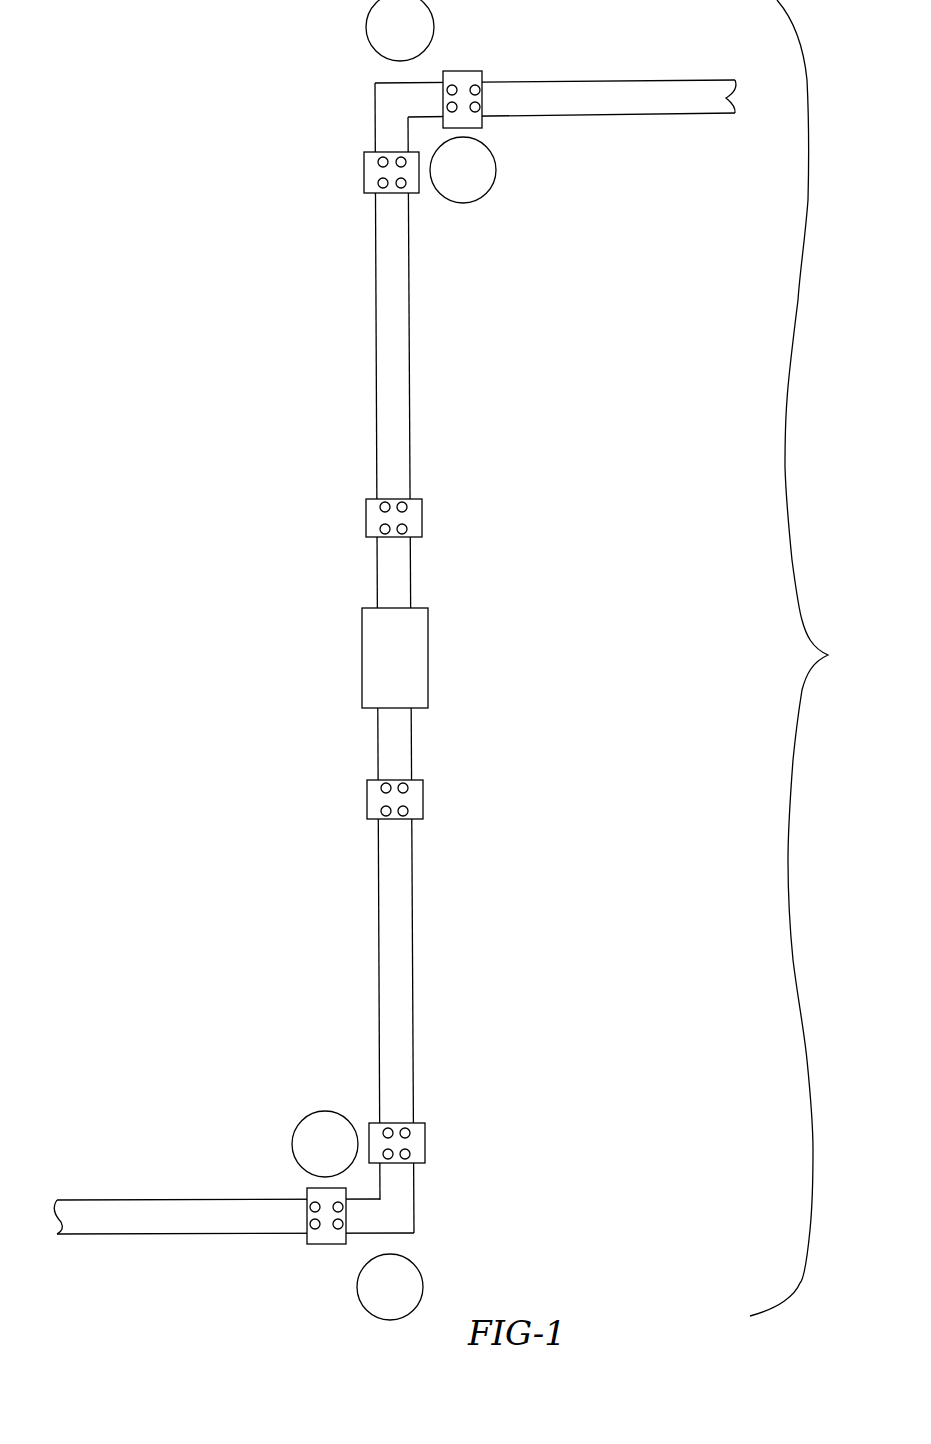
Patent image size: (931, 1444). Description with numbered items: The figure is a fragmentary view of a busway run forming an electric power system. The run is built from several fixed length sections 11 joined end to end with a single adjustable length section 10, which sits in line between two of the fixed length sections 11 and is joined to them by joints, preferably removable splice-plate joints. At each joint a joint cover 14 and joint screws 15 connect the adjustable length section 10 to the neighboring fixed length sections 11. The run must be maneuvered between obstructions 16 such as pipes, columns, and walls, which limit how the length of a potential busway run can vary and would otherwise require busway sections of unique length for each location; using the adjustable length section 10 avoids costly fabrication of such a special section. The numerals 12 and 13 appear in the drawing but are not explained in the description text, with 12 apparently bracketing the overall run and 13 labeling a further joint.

The adjustable length section 10 is at (362, 661).
The fixed length section 11 is at (367, 354).
The conduit assembly 12 is at (807, 658).
The connector clamp 13 is at (423, 799).
The joint cover 14 is at (423, 520).
The joint screw 15 is at (380, 504).
The obstruction 16 is at (378, 28).